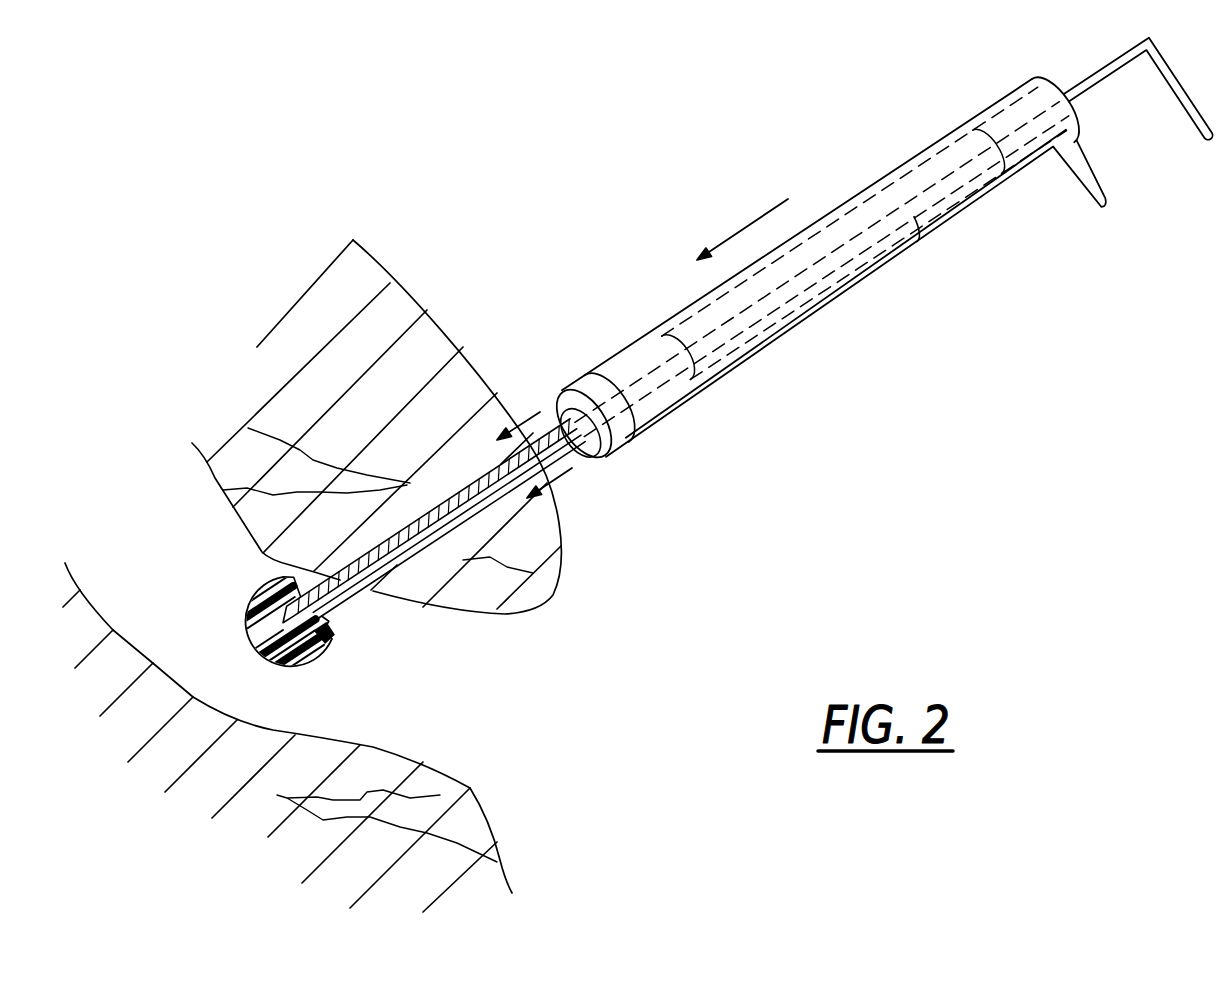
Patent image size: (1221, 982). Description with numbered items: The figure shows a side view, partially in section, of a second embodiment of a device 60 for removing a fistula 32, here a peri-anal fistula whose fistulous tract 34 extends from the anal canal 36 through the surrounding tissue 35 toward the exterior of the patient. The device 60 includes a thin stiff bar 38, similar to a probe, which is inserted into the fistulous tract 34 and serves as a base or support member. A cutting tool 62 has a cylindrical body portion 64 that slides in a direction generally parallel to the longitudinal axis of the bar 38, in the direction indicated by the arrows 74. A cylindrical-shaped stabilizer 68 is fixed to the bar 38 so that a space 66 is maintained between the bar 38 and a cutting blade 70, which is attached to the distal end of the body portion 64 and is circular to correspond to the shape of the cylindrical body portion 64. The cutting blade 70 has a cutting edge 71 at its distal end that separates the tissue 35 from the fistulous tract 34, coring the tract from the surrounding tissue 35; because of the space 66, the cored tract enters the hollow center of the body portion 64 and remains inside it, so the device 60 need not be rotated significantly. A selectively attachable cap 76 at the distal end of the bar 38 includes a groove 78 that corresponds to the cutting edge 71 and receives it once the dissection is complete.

The fistula 32 is at (429, 570).
The fistulous tract 34 is at (465, 487).
The tissue 35 is at (397, 406).
The anal canal 36 is at (199, 552).
The bar 38 is at (1119, 58).
The device 60 is at (872, 258).
The cutting tool 62 is at (887, 174).
The cylindrical body portion 64 is at (657, 326).
The space 66 is at (620, 369).
The stabilizer 68 is at (913, 218).
The cutting blade 70 is at (563, 406).
The cutting edge 71 is at (585, 455).
The arrows 74 is at (740, 231).
The cap 76 is at (250, 612).
The groove 78 is at (322, 639).